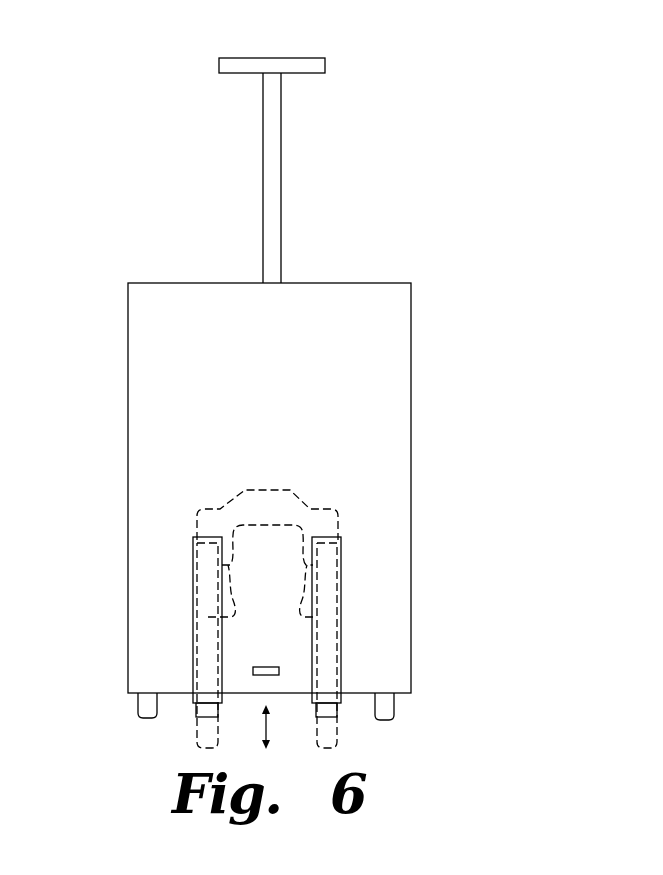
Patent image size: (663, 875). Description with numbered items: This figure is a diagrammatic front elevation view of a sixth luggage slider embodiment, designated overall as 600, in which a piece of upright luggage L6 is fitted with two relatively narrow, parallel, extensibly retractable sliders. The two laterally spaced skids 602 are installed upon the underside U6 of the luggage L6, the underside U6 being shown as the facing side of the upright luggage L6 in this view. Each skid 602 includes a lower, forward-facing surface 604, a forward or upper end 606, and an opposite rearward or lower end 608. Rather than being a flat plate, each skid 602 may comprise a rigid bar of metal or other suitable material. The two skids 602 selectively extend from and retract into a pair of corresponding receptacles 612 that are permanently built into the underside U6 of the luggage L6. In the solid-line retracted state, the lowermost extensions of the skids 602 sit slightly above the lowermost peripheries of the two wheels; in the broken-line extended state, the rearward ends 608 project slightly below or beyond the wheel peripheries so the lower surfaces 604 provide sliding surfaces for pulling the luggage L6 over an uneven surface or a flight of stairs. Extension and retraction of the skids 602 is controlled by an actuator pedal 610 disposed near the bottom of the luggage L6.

The luggage assembly 600 is at (173, 430).
The slider or skid 602 is at (267, 539).
The lower surface 604 is at (260, 587).
The forward end 606 is at (267, 506).
The rearward end 608 is at (195, 710).
The actuator pedal 610 is at (265, 667).
The receptacles 612 is at (193, 590).
The underside U6 is at (287, 363).
The luggage L6 is at (411, 368).